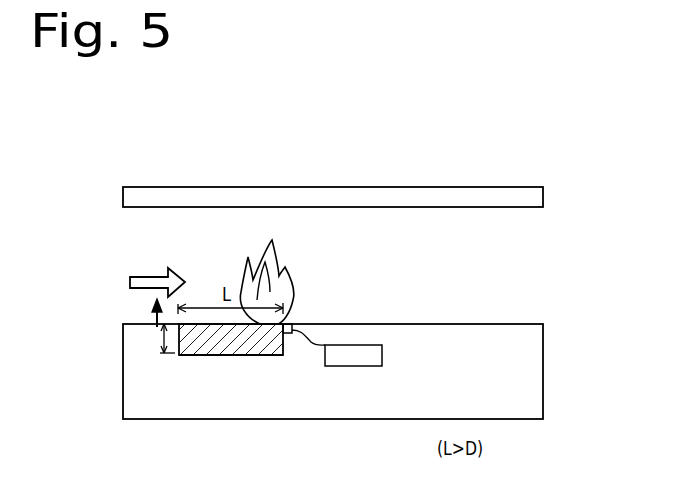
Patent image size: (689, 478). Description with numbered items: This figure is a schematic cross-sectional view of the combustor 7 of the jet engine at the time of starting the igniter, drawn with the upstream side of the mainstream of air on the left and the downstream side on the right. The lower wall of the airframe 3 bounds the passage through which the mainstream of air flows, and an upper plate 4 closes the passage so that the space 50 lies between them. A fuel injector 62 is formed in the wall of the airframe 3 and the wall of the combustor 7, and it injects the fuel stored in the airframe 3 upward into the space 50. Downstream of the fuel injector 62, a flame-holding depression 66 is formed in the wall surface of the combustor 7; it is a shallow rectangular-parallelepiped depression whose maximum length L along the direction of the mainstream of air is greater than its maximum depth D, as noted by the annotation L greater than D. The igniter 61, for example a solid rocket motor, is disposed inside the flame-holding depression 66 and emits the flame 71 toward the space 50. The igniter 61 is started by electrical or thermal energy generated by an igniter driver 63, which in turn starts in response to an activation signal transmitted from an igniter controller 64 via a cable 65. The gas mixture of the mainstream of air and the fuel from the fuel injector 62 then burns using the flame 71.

The airframe 3 is at (145, 413).
The cover plate 4 is at (303, 199).
The combustor 7 is at (581, 186).
The space 50 is at (160, 232).
The igniter 61 is at (264, 345).
The fuel injector 62 is at (156, 331).
The igniter driver 63 is at (292, 325).
The igniter controller 64 is at (367, 350).
The cable 65 is at (328, 343).
The flame-holding depression 66 is at (220, 357).
The flame 71 is at (287, 267).